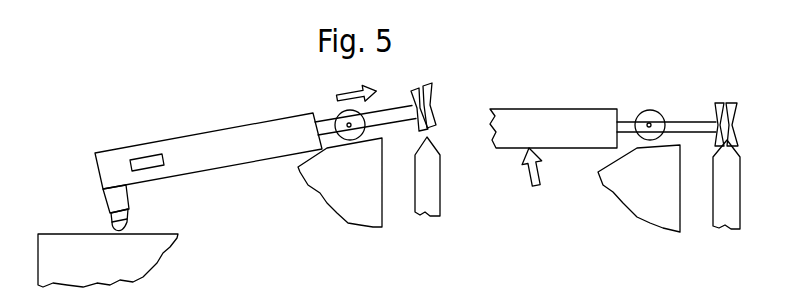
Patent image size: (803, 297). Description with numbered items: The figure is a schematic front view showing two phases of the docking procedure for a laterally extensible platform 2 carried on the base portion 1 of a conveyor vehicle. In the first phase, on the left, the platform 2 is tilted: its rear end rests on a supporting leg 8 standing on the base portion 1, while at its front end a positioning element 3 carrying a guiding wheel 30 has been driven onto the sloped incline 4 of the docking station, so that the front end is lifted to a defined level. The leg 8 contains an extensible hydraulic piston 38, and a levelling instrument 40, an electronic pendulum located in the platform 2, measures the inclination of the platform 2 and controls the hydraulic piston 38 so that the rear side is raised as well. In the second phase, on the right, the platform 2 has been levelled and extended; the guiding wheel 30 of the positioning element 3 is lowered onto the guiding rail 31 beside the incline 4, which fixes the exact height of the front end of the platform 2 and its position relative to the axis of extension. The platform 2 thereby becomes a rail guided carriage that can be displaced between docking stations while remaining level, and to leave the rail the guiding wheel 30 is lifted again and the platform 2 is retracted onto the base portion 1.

The base portion 1 is at (55, 248).
The platform 2 is at (213, 145).
The positioning element 3 is at (337, 115).
The incline 4 is at (338, 185).
The leg 8 is at (113, 208).
The guiding wheel 30 is at (427, 98).
The guiding rail 31 is at (428, 177).
The hydraulic piston 38 is at (127, 218).
The levelling instrument 40 is at (141, 159).